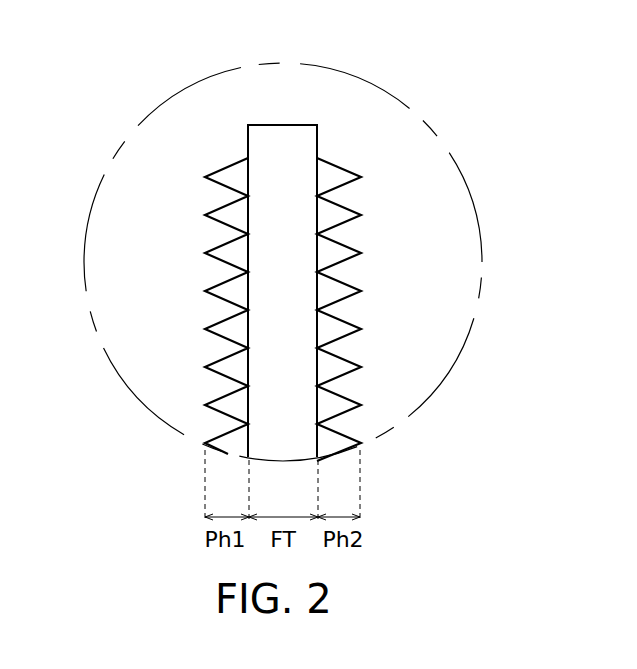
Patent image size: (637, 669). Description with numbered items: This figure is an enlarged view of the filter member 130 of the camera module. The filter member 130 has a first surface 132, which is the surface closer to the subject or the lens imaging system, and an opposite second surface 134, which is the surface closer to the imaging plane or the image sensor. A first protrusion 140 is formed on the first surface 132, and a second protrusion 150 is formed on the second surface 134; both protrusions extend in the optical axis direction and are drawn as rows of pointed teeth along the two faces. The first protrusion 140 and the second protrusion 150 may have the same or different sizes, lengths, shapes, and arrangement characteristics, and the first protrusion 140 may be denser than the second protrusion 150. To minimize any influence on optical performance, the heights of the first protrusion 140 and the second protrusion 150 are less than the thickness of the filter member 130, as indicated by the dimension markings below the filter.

The filter member 130 is at (288, 125).
The first surface 132 is at (248, 137).
The second surface 134 is at (317, 137).
The first protrusion 140 is at (232, 201).
The second protrusion 150 is at (333, 201).